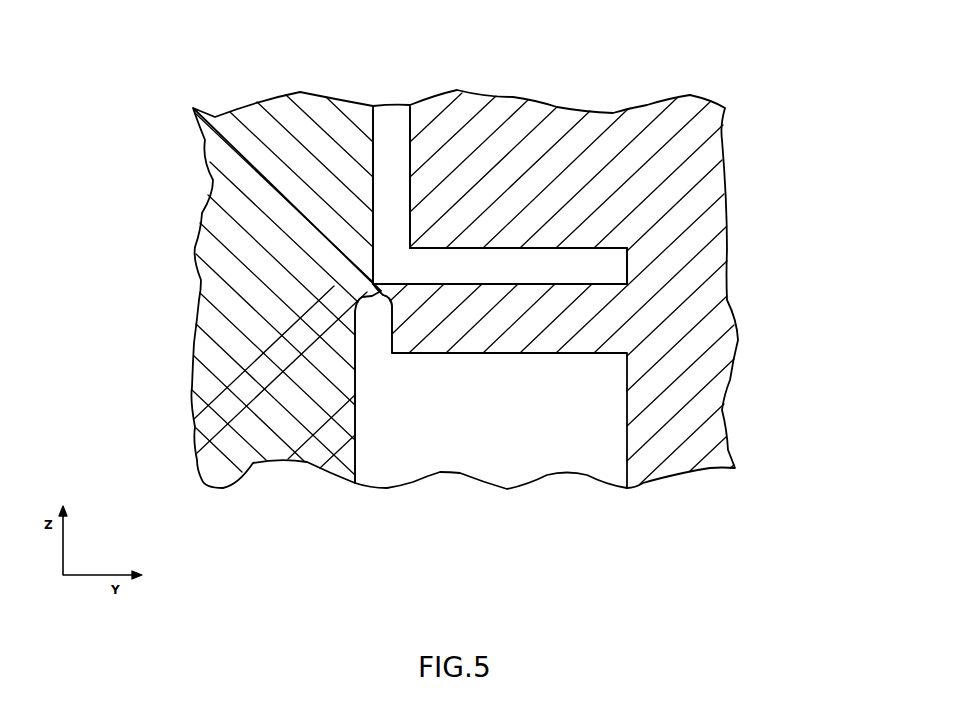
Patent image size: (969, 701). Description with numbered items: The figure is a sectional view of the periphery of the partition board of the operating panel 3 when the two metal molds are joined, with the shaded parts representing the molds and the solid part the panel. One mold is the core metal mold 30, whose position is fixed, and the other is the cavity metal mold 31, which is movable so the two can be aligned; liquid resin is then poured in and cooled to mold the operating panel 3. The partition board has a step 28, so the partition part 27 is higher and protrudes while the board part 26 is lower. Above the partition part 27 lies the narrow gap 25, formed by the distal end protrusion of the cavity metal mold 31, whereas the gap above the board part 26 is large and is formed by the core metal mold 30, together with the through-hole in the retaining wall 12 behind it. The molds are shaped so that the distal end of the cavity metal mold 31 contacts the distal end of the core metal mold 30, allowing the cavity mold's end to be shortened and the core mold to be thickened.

The operating panel 3 is at (397, 118).
The retaining wall 12 is at (630, 328).
The gap 25 is at (381, 291).
The board part 26 is at (463, 435).
The partition part 27 is at (355, 328).
The step 28 is at (397, 363).
The core metal mold 30 is at (595, 218).
The cavity metal mold 31 is at (197, 250).